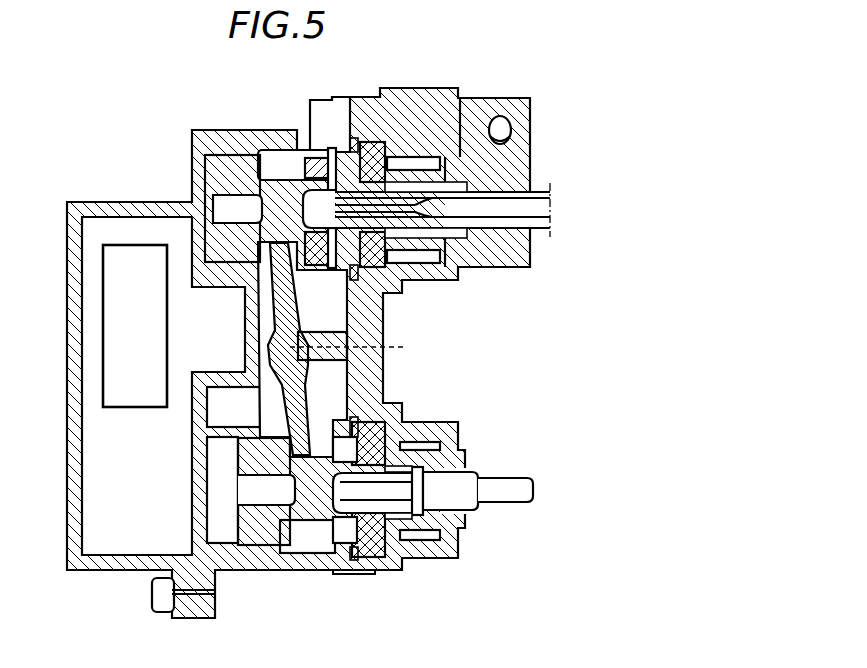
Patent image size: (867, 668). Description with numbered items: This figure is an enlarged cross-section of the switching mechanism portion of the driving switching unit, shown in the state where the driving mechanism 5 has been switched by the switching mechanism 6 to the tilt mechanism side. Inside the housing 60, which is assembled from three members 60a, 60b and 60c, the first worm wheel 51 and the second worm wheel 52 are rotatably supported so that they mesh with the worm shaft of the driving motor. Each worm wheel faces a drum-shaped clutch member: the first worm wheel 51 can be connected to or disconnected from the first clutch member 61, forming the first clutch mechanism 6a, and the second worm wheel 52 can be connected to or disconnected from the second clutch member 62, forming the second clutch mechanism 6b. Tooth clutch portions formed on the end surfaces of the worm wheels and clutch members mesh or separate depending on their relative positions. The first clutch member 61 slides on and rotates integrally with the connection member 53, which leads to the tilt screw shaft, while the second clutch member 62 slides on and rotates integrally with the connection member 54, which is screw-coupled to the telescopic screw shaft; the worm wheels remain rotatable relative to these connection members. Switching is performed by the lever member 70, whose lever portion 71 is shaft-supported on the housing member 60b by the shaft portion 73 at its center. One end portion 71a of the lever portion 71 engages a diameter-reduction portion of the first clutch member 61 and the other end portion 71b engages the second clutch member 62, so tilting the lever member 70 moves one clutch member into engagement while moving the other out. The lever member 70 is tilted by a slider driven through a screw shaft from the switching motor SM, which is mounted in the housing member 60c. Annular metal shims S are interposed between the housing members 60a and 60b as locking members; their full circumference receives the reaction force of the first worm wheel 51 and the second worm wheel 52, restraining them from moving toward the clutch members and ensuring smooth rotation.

The driving mechanism 5 is at (298, 352).
The switching mechanism 6 is at (289, 349).
The first clutch mechanism 6a is at (342, 556).
The second clutch mechanism 6b is at (334, 150).
The housing 60 is at (298, 352).
The housing member 60a is at (383, 565).
The housing member 60b is at (306, 562).
The housing member 60c is at (115, 562).
The first clutch member 61 is at (262, 533).
The second clutch member 62 is at (228, 168).
The lever member 70 is at (310, 382).
The lever portion 71 is at (156, 349).
The one end portion 71a is at (297, 430).
The other end portion 71b is at (270, 258).
The shaft portion 73 is at (316, 346).
The first worm wheel 51 is at (430, 535).
The second worm wheel 52 is at (437, 165).
The connection member 53 is at (507, 494).
The connection member 54 is at (540, 232).
The shim S is at (355, 140).
The switching motor SM is at (130, 350).